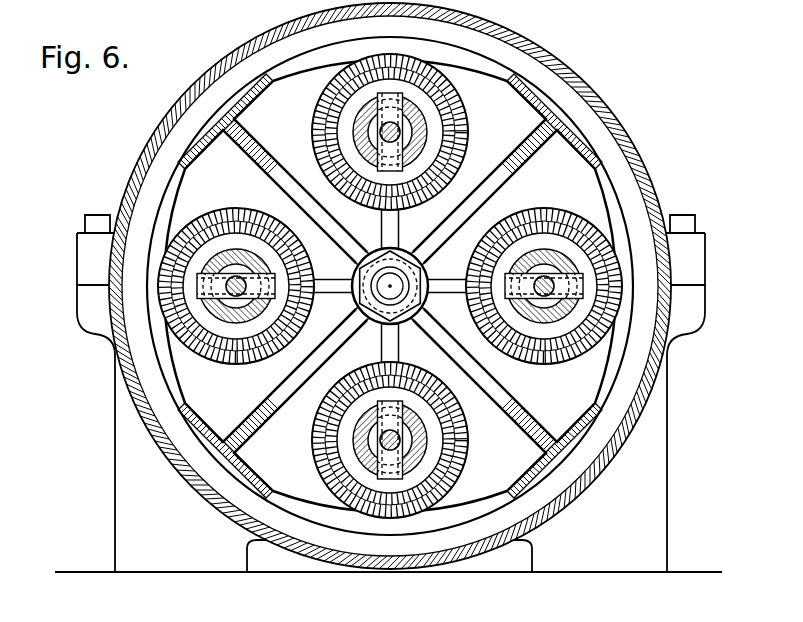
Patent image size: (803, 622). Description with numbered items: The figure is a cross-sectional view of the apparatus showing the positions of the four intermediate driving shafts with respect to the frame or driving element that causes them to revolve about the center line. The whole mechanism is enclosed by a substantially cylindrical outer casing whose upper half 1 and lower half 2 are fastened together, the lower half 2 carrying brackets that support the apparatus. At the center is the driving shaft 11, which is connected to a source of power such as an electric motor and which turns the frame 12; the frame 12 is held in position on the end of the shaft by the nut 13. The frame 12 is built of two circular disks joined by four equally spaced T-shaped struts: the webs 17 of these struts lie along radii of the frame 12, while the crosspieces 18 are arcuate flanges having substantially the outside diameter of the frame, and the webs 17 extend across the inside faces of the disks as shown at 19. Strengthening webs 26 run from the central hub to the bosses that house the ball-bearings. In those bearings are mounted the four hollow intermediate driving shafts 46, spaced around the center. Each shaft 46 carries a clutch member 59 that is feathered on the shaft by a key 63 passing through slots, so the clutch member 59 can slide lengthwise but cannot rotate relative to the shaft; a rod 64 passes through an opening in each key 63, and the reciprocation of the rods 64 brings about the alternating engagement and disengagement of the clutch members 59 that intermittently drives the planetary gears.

The upper half of outer casing 1 is at (610, 108).
The lower half of outer casing 2 is at (490, 558).
The driving shaft 11 is at (388, 295).
The frame or driving element 12 is at (608, 375).
The nut 13 is at (414, 293).
The webs of the struts 17 is at (252, 134).
The crosspieces of the struts 18 is at (240, 90).
The web extensions across disk faces 19 is at (283, 186).
The webs 26 is at (398, 348).
The hollow shafts 46 is at (348, 443).
The clutch members 59 is at (322, 488).
The keys 63 is at (380, 172).
The rods 64 is at (224, 322).